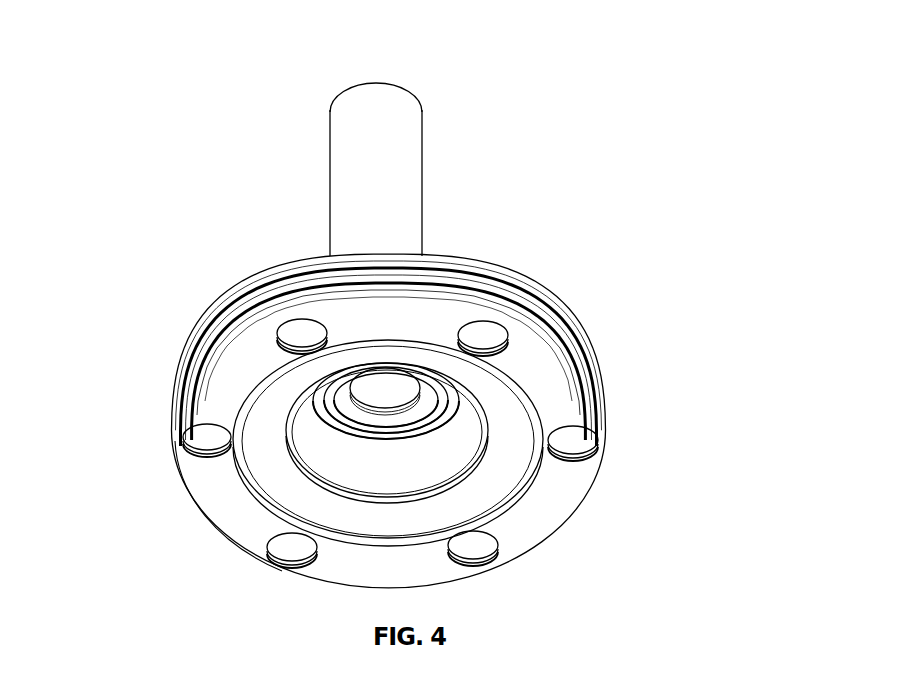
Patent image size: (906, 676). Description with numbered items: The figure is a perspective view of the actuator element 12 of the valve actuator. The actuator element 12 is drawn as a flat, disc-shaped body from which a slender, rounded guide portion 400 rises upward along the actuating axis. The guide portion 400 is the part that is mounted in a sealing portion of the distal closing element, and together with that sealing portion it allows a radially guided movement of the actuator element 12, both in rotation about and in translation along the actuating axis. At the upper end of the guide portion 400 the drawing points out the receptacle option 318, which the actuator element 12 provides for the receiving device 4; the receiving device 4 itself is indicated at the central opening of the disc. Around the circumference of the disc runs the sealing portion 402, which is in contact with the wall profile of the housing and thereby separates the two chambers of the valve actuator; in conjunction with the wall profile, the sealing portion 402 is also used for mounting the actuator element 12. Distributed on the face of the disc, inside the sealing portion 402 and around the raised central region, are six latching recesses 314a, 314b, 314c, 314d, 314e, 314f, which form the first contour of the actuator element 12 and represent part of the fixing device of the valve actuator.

The actuator element 12 is at (503, 135).
The receptacle option 318 is at (350, 82).
The guide portion 400 is at (360, 135).
The sealing portion 402 is at (490, 275).
The receiving device 4 is at (405, 376).
The latching recess 314a is at (297, 331).
The latching recess 314b is at (487, 338).
The latching recess 314c is at (585, 441).
The latching recess 314d is at (482, 547).
The latching recess 314e is at (290, 548).
The latching recess 314f is at (210, 441).